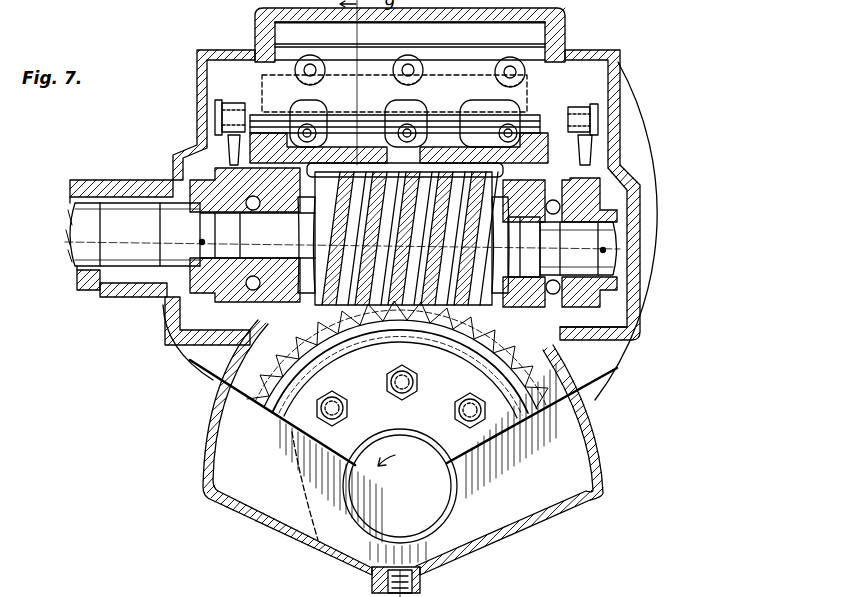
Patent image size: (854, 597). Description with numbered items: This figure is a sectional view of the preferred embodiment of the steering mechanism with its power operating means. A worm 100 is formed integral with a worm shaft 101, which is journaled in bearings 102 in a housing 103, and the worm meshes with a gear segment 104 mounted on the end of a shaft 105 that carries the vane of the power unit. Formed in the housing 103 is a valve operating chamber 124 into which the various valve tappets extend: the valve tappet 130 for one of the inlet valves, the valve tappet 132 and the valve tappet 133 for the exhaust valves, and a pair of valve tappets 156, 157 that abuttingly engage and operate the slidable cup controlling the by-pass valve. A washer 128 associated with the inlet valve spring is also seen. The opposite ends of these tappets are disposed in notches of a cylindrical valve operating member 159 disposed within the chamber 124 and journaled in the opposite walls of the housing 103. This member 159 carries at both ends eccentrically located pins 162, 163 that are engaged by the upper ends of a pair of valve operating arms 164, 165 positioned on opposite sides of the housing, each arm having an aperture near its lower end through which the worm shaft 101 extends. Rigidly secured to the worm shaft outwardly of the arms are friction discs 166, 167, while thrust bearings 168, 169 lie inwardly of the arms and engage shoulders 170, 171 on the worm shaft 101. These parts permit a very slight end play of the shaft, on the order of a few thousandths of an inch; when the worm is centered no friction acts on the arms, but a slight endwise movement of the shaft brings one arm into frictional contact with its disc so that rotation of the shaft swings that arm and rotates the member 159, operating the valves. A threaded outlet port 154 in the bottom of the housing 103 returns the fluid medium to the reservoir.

The worm 100 is at (192, 362).
The worm shaft 101 is at (419, 238).
The bearings 102 is at (626, 378).
The housing 103 is at (207, 430).
The gear segment 104 is at (272, 392).
The shaft 105 is at (437, 492).
The valve operating chamber 124 is at (455, 47).
The washer 128 is at (307, 124).
The valve tappet 130 is at (497, 71).
The valve tappet 132 is at (318, 67).
The valve tappet 133 is at (480, 127).
The threaded outlet port 154 is at (356, 595).
The valve tappet 156 is at (407, 62).
The valve tappet 157 is at (412, 128).
The cylindrical valve operating member 159 is at (383, 104).
The pin 162 is at (598, 125).
The pin 163 is at (213, 116).
The valve operating arm 164 is at (585, 160).
The valve operating arm 165 is at (228, 155).
The friction disc 166 is at (612, 212).
The friction disc 167 is at (167, 313).
The thrust bearing 168 is at (640, 324).
The thrust bearing 169 is at (200, 332).
The shoulder 170 is at (605, 240).
The shoulder 171 is at (162, 227).